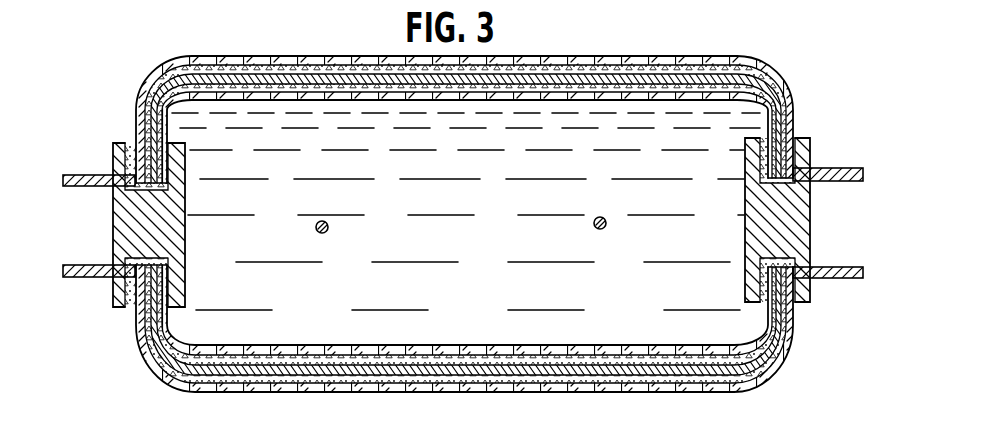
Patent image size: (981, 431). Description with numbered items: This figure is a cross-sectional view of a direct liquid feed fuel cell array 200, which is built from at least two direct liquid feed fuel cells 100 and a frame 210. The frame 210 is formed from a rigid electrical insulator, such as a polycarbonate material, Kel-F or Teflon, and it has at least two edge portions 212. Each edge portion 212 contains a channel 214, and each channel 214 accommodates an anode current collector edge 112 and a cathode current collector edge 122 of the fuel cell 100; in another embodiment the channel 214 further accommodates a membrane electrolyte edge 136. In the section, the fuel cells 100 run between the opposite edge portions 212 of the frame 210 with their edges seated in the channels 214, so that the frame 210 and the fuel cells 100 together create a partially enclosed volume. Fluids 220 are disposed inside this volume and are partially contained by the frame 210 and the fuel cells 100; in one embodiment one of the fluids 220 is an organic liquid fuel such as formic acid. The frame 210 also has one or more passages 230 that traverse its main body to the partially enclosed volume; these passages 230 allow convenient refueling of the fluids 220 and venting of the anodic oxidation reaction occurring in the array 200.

The direct liquid feed fuel cell 100 is at (152, 76).
The anode current collector edge 112 is at (793, 343).
The cathode current collector edge 122 is at (788, 380).
The membrane electrolyte edge 136 is at (797, 368).
The direct liquid feed fuel cell array 200 is at (778, 57).
The frame 210 is at (113, 219).
The edge portion 212 is at (113, 157).
The channel 214 is at (135, 143).
The fluids 220 is at (260, 118).
The passage 230 is at (327, 232).